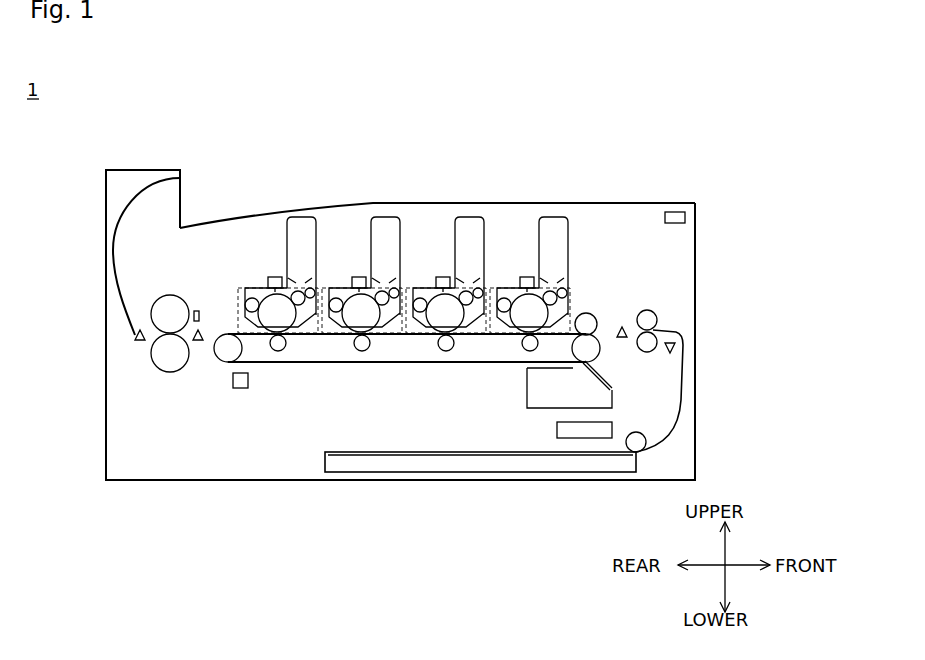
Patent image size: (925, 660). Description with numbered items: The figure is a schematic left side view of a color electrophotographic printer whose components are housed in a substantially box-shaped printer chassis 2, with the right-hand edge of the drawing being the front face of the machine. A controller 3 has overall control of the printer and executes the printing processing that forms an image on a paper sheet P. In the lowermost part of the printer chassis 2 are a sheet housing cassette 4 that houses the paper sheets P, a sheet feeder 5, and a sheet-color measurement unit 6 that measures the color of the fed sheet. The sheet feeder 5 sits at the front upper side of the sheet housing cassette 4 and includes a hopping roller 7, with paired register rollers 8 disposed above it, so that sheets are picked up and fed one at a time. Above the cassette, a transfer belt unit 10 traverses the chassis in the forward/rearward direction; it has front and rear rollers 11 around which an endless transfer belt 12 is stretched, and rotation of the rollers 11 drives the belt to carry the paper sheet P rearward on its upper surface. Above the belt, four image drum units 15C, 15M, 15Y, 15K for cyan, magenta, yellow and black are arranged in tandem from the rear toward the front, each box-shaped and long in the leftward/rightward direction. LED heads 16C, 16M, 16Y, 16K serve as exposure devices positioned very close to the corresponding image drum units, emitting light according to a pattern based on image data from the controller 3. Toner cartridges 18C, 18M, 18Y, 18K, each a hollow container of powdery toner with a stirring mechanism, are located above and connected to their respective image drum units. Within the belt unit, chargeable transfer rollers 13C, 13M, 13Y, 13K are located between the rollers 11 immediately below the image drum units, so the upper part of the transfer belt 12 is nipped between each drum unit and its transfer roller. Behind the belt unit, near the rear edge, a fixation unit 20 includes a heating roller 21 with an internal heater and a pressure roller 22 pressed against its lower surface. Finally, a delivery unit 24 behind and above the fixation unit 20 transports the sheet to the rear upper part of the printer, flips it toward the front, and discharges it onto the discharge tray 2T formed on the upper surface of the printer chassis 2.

The printer chassis 2 is at (132, 480).
The discharge tray 2T is at (216, 209).
The controller 3 is at (142, 439).
The sheet housing cassette 4 is at (560, 472).
The paper sheet P is at (490, 462).
The sheet feeder 5 is at (695, 418).
The sheet-color measurement unit 6 is at (585, 432).
The hopping roller 7 is at (638, 452).
The paired register rollers 8 is at (660, 345).
The transfer belt unit 10 is at (334, 404).
The front and rear rollers 11 is at (228, 352).
The transfer belt 12 is at (411, 364).
The transfer roller 13C is at (279, 352).
The transfer roller 13M is at (363, 352).
The transfer roller 13Y is at (447, 352).
The transfer roller 13K is at (531, 352).
The image drum unit 15C is at (250, 288).
The image drum unit 15M is at (336, 288).
The image drum unit 15Y is at (421, 288).
The image drum unit 15K is at (506, 288).
The LED head 16C is at (282, 285).
The LED head 16M is at (364, 285).
The LED head 16Y is at (447, 285).
The LED head 16K is at (530, 285).
The toner cartridge 18C is at (302, 216).
The toner cartridge 18M is at (386, 216).
The toner cartridge 18Y is at (470, 216).
The toner cartridge 18K is at (554, 216).
The fixation unit 20 is at (138, 399).
The heating roller 21 is at (170, 315).
The pressure roller 22 is at (172, 352).
The delivery unit 24 is at (112, 192).